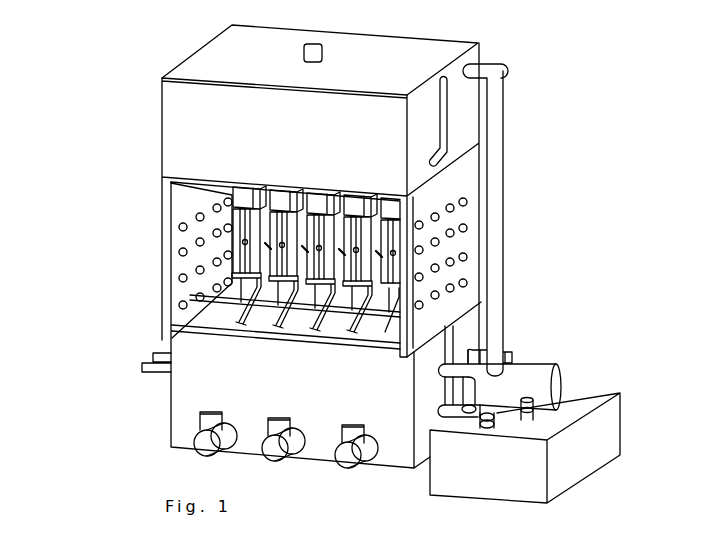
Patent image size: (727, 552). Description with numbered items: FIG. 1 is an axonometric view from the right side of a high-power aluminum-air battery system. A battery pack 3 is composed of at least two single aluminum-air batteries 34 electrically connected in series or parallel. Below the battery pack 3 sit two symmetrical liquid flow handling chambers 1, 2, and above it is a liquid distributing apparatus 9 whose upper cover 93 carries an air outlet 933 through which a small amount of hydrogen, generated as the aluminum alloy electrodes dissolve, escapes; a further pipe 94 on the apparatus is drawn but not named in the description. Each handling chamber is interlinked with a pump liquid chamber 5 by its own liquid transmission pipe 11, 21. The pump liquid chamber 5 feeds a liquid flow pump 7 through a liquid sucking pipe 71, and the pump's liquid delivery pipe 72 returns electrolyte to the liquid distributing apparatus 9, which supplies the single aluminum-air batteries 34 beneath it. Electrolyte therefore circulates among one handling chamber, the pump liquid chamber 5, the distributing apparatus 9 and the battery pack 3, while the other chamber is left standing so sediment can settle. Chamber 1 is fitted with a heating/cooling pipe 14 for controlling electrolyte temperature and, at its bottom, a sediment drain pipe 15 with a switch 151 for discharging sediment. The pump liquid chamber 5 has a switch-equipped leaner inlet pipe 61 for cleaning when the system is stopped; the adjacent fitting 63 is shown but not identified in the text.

The liquid flow handling chamber 1 is at (187, 385).
The liquid flow handling chamber 2 is at (462, 332).
The battery pack 3 is at (235, 203).
The single aluminum-air battery 34 is at (240, 250).
The pump liquid chamber 5 is at (563, 468).
The liquid flow pump 7 is at (530, 391).
The liquid sucking pipe 71 is at (535, 410).
The liquid delivery pipe 72 is at (498, 114).
The liquid distributing apparatus 9 is at (203, 128).
The upper cover 93 is at (422, 55).
The air outlet 933 is at (304, 53).
The vent pipe 94 is at (448, 100).
The liquid transmission pipe 11 is at (472, 389).
The heating/cooling pipe 14 is at (140, 363).
The sediment drain pipe 15 is at (203, 445).
The switch 151 is at (200, 410).
The liquid transmission pipe 21 is at (512, 358).
The pump liquid chamber leaner inlet pipe 61 is at (497, 417).
The valve 63 is at (495, 412).